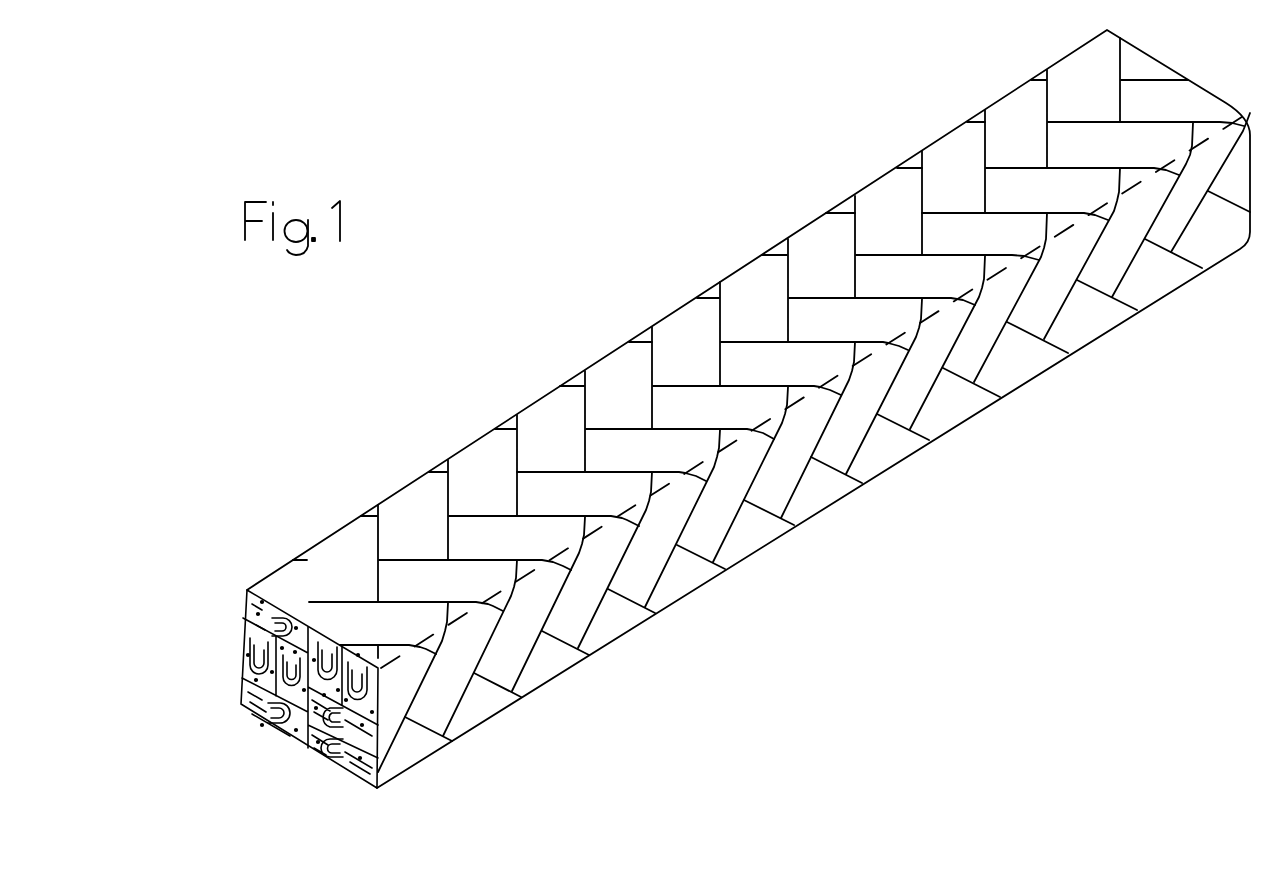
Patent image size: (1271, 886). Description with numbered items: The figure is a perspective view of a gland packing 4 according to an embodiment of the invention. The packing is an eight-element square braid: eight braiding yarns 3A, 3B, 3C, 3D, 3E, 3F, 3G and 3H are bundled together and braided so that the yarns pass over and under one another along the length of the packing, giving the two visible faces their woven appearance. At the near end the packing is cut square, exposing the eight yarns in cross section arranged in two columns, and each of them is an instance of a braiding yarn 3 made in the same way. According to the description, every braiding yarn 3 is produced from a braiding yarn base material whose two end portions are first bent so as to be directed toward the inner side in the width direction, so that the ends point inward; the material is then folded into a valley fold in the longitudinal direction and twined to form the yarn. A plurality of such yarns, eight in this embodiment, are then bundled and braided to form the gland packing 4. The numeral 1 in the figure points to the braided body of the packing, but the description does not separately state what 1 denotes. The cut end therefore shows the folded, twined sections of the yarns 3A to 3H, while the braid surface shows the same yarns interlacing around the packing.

The cable 1 is at (748, 409).
The braiding yarn 3 is at (345, 625).
The braiding yarn 3A is at (375, 692).
The braiding yarn 3B is at (320, 638).
The braiding yarn 3C is at (384, 739).
The braiding yarn 3D is at (313, 757).
The braiding yarn 3E is at (247, 594).
The braiding yarn 3F is at (250, 634).
The braiding yarn 3G is at (245, 672).
The braiding yarn 3H is at (293, 733).
The gland packing 4 is at (803, 229).